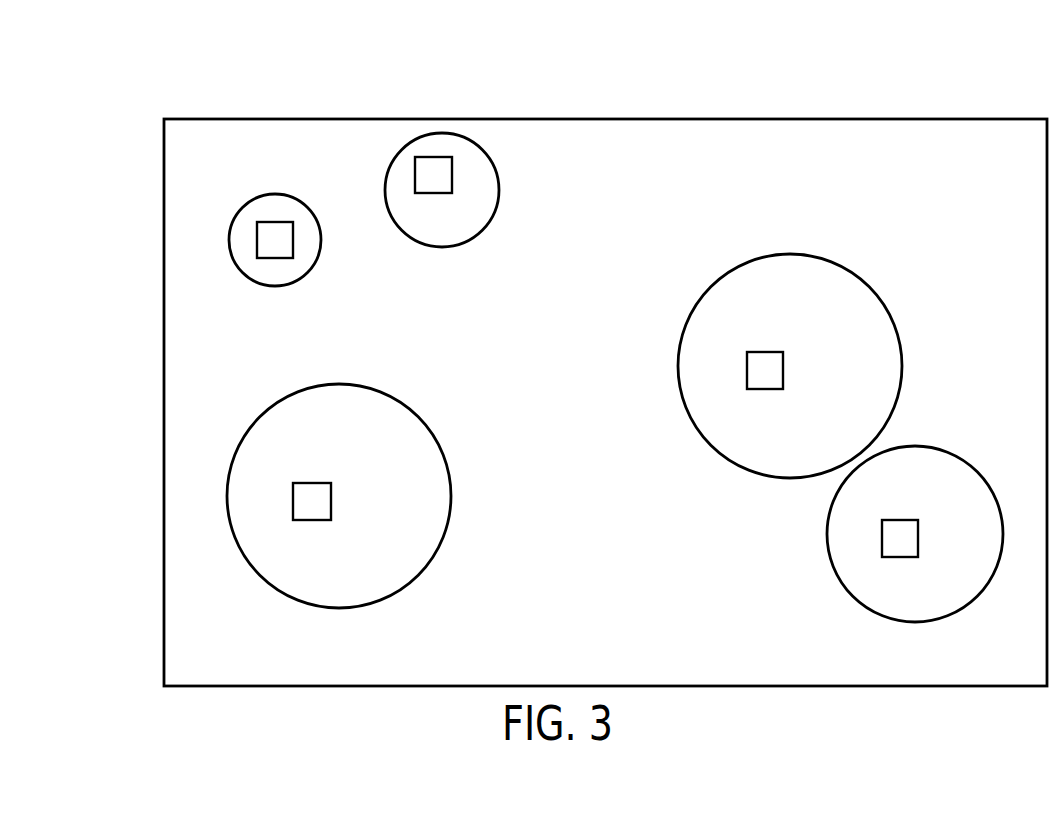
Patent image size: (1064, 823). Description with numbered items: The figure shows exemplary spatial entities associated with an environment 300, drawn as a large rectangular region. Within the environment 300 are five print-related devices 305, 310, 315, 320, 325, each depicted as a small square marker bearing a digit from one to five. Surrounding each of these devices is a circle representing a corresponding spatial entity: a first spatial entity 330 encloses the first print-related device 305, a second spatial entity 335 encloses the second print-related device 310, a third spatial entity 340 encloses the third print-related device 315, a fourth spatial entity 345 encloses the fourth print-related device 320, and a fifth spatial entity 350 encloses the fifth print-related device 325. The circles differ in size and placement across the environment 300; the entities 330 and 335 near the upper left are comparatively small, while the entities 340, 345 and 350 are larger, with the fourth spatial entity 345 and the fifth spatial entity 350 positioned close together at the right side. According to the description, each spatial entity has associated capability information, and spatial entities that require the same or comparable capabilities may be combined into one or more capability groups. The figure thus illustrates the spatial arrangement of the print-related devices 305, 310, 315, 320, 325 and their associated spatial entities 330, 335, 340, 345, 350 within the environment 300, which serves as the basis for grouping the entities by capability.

The environment 300 is at (310, 100).
The print-related device 305 is at (282, 258).
The print-related device 310 is at (427, 193).
The print-related device 315 is at (322, 520).
The print-related device 320 is at (775, 389).
The print-related device 325 is at (908, 557).
The spatial entity 330 is at (248, 275).
The spatial entity 335 is at (473, 238).
The spatial entity 340 is at (405, 590).
The spatial entity 345 is at (877, 292).
The spatial entity 350 is at (970, 460).